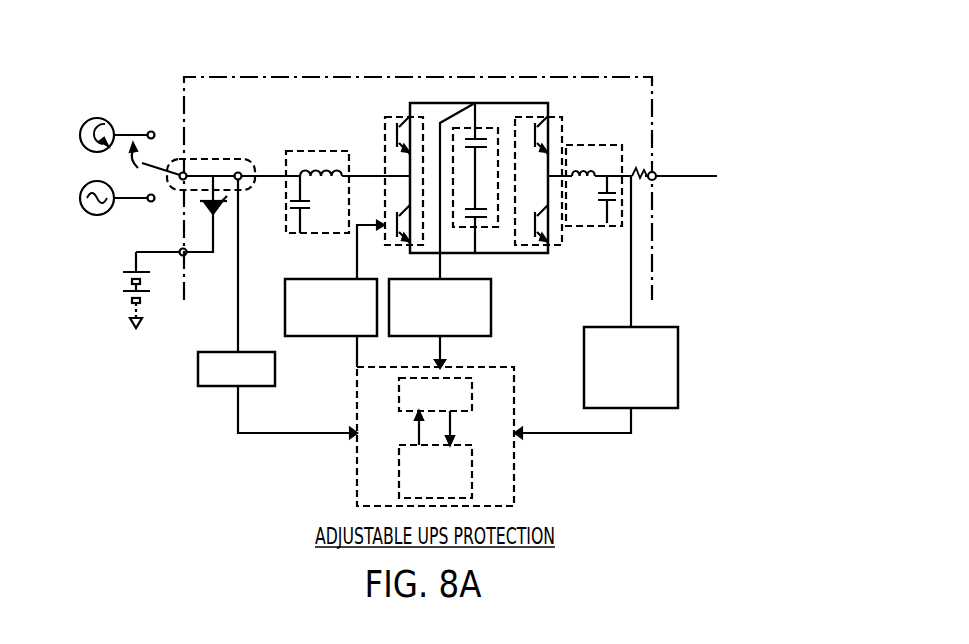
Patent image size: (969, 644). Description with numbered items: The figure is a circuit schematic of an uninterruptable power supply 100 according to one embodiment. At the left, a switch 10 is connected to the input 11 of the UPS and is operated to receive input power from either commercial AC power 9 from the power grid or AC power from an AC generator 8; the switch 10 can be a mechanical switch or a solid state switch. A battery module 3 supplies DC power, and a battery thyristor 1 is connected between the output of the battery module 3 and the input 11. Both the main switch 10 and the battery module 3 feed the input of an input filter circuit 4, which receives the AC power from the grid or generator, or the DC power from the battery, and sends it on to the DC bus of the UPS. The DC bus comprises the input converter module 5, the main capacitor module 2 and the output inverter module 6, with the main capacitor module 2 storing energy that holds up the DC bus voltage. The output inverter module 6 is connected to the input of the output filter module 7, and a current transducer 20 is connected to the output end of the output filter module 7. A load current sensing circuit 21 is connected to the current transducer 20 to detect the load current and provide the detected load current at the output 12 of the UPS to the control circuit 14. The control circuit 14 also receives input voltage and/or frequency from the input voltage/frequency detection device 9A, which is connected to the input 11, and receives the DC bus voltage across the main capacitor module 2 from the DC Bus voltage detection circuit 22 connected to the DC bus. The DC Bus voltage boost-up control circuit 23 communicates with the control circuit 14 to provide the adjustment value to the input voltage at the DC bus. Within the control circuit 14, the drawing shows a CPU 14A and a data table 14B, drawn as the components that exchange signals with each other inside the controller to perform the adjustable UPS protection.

The uninterruptable power supply 100 is at (245, 75).
The AC generator 8 is at (78, 127).
The commercial AC power 9 is at (78, 195).
The switch 10 is at (153, 124).
The input 11 is at (215, 155).
The battery thyristor 1 is at (208, 208).
The battery module 3 is at (128, 270).
The input filter circuit 4 is at (283, 157).
The input converter module 5 is at (382, 125).
The main capacitor module 2 is at (485, 230).
The output inverter module 6 is at (563, 128).
The output filter module 7 is at (597, 228).
The current transducer 20 is at (643, 170).
The output 12 is at (656, 174).
The DC Bus voltage boost-up control circuit 23 is at (289, 279).
The DC Bus voltage detection circuit 22 is at (492, 306).
The load current sensing circuit 21 is at (680, 368).
The input voltage/frequency detection device 9A is at (198, 366).
The control circuit 14 is at (356, 405).
The CPU 14A is at (473, 395).
The data table 14B is at (472, 470).